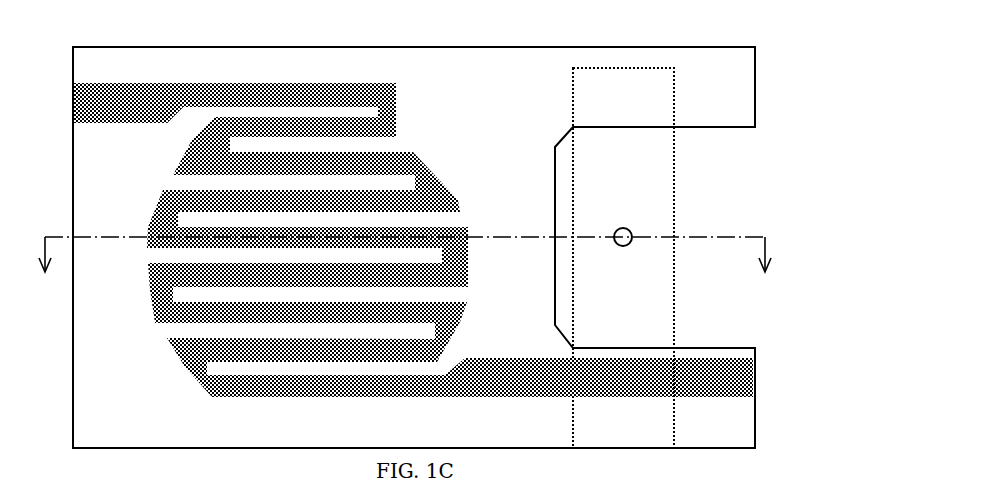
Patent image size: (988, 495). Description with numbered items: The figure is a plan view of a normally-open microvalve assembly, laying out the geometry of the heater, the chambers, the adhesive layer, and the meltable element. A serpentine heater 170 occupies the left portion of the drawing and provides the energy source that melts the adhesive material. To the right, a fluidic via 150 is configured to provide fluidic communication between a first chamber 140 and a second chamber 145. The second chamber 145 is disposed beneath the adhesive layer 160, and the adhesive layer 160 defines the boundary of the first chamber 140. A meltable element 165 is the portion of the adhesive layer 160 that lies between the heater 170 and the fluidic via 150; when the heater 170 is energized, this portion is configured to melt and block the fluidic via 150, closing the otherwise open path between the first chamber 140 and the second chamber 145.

The first chamber 140 is at (716, 347).
The second chamber 145 is at (575, 110).
The fluidic via 150 is at (629, 228).
The adhesive layer 160 is at (116, 432).
The meltable element 165 is at (407, 254).
The serpentine heater 170 is at (115, 113).